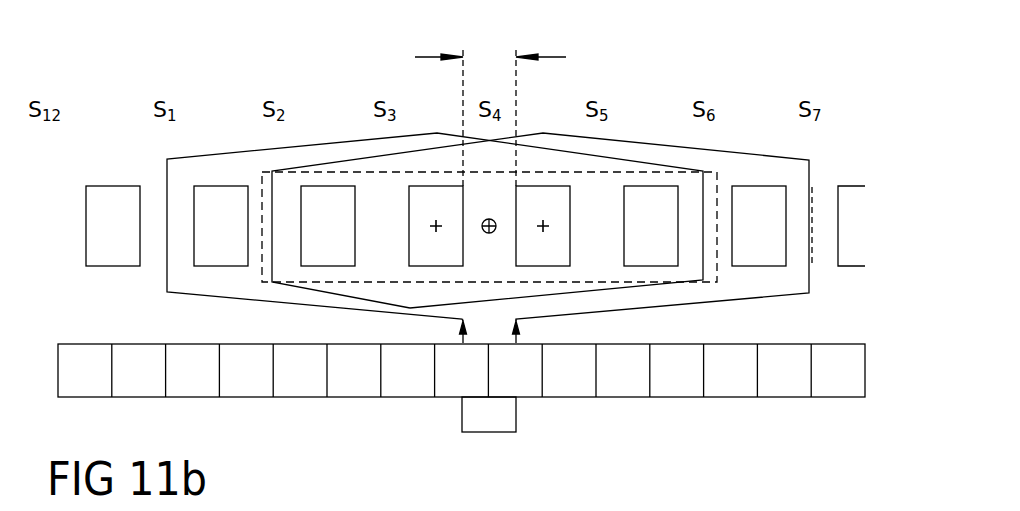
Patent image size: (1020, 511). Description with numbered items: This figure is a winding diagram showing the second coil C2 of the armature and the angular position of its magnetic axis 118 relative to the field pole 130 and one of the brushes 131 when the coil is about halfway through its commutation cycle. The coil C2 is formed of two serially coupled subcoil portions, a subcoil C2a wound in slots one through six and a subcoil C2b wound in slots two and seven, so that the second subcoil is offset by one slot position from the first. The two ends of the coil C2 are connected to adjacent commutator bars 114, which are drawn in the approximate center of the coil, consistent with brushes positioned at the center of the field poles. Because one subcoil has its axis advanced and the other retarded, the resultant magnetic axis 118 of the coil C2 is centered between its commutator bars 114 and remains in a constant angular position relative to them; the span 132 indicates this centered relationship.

The commutator bars 114 is at (827, 410).
The magnetic axis 118 is at (491, 233).
The field pole 130 is at (620, 171).
The brush 131 is at (474, 424).
The coil pitch dimension 132 is at (432, 52).
The second coil C2 is at (494, 194).
The subcoil C2a is at (237, 299).
The subcoil C2b is at (743, 299).